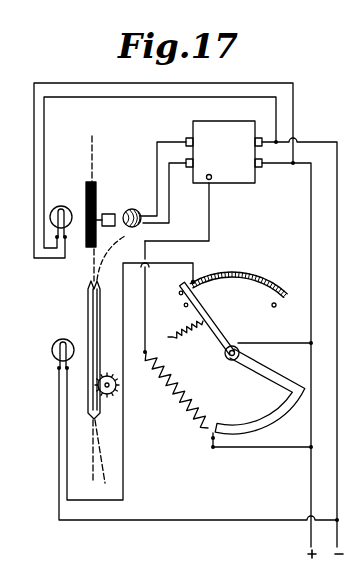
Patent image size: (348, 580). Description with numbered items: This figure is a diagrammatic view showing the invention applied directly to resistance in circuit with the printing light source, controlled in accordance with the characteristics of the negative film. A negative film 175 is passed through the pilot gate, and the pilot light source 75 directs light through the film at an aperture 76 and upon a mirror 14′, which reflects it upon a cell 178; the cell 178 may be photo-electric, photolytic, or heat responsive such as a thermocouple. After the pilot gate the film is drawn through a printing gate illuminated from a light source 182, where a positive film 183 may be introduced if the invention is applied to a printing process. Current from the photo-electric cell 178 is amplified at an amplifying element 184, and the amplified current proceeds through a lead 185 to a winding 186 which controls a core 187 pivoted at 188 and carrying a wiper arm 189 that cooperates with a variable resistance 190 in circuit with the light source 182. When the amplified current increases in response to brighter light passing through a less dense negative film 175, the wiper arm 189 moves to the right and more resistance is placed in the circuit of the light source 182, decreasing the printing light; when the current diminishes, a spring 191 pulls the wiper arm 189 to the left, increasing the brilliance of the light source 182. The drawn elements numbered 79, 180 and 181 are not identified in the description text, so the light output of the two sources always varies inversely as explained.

The mirror 14′ is at (117, 211).
The pilot light source 75 is at (60, 206).
The aperture 76 is at (106, 211).
The contact 79 is at (98, 206).
The negative film 175 is at (93, 145).
The cell 178 is at (123, 211).
The slit 180 is at (86, 305).
The pinion 181 is at (113, 395).
The light source 182 is at (52, 350).
The positive film 183 is at (123, 243).
The amplifying element 184 is at (220, 122).
The lead 185 is at (211, 214).
The winding 186 is at (185, 399).
The core 187 is at (273, 416).
The pivot 188 is at (239, 346).
The wiper arm 189 is at (202, 306).
The variable resistance 190 is at (240, 273).
The spring 191 is at (182, 339).